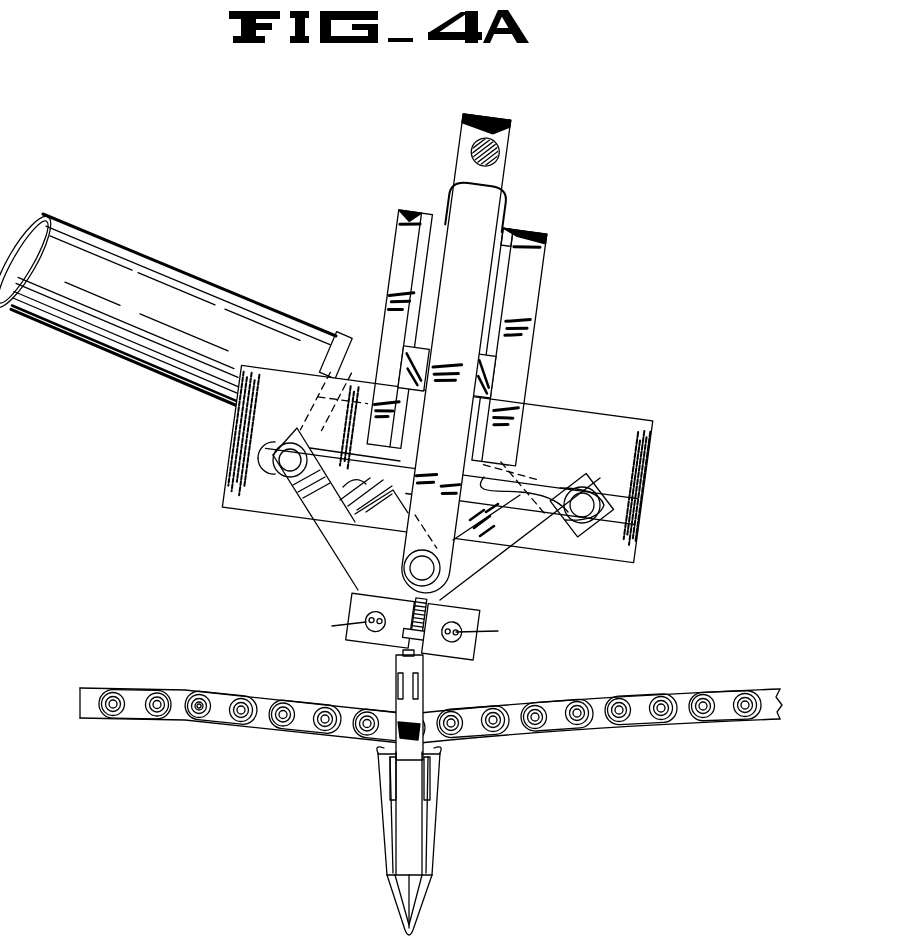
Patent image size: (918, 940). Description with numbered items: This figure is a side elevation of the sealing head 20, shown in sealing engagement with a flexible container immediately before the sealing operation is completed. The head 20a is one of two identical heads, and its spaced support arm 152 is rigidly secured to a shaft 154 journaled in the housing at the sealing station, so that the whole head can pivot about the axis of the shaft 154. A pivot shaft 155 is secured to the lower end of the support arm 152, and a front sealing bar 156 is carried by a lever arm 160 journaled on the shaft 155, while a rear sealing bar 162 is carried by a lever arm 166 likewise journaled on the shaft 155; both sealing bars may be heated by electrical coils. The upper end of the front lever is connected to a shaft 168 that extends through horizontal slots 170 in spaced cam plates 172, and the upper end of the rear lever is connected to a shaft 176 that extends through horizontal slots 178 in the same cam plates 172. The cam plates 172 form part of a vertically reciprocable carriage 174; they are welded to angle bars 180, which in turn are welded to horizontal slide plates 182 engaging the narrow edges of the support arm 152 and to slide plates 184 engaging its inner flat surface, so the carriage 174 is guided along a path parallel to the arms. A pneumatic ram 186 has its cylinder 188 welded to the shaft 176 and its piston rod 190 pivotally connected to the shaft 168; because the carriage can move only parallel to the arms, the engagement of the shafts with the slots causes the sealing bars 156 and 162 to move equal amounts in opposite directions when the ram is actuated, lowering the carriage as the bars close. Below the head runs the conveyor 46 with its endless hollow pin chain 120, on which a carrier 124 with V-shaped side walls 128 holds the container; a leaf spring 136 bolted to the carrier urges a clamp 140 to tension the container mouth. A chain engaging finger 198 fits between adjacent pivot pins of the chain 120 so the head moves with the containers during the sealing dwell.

The sealing head 20 is at (207, 113).
The sealing head 20a is at (580, 304).
The conveyor 46 is at (753, 688).
The hollow pin chain 120 is at (187, 720).
The carrier 124 is at (432, 893).
The side walls 128 is at (383, 828).
The leaf spring 136 is at (410, 789).
The clamp 140 is at (412, 672).
The support arm 152 is at (458, 167).
The shaft 154 is at (497, 144).
The pivot shaft 155 is at (420, 567).
The front sealing bar 156 is at (473, 612).
The lever arm 160 is at (533, 562).
The rear sealing bar 162 is at (358, 602).
The lever arm 166 is at (318, 529).
The shaft 168 is at (586, 523).
The horizontal slots 170 is at (486, 478).
The cam plates 172 is at (637, 423).
The carriage 174 is at (525, 230).
The shaft 176 is at (290, 460).
The horizontal slots 178 is at (359, 483).
The angle bars 180 is at (401, 236).
The horizontal slide plates 182 is at (476, 203).
The slide plates 184 is at (492, 363).
The pneumatic ram 186 is at (85, 222).
The cylinder 188 is at (84, 340).
The piston rod 190 is at (292, 406).
The chain engaging finger 198 is at (396, 695).